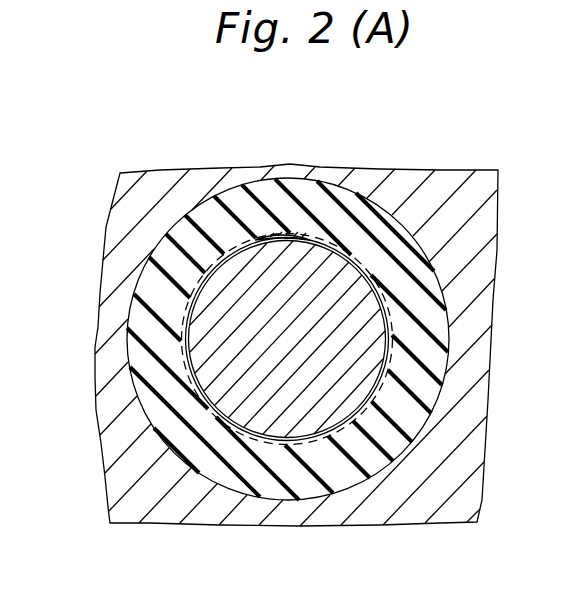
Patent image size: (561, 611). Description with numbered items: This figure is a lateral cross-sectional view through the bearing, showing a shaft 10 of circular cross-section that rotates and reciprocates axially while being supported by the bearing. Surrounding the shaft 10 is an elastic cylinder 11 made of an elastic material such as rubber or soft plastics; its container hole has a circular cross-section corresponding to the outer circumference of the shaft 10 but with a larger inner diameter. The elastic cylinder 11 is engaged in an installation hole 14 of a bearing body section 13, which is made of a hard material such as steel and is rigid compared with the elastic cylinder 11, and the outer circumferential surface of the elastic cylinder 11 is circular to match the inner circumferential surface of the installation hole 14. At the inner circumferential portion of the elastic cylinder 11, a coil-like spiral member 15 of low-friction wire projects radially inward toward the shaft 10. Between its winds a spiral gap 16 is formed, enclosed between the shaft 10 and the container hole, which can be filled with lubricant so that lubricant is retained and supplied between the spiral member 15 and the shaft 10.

The shaft 10 is at (203, 342).
The elastic cylinder 11 is at (260, 470).
The bearing body section 13 is at (397, 193).
The installation hole 14 is at (233, 197).
The spiral member 15 is at (288, 232).
The spiral gap 16 is at (377, 408).